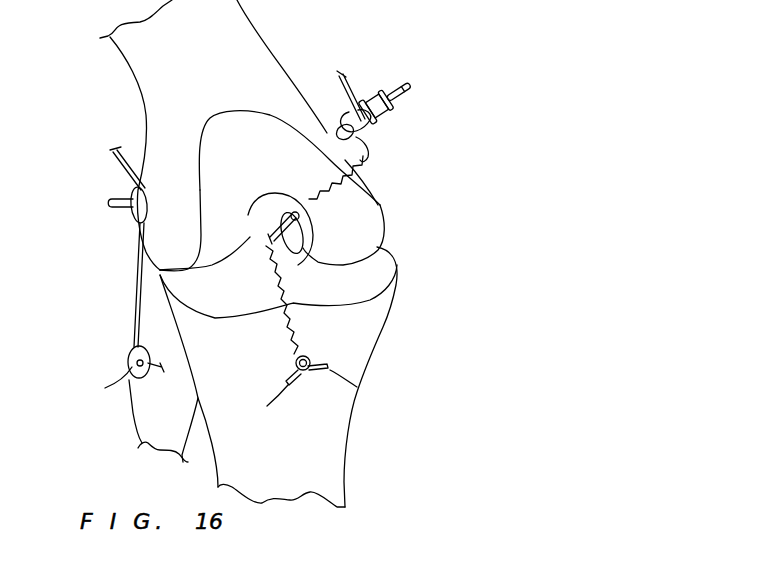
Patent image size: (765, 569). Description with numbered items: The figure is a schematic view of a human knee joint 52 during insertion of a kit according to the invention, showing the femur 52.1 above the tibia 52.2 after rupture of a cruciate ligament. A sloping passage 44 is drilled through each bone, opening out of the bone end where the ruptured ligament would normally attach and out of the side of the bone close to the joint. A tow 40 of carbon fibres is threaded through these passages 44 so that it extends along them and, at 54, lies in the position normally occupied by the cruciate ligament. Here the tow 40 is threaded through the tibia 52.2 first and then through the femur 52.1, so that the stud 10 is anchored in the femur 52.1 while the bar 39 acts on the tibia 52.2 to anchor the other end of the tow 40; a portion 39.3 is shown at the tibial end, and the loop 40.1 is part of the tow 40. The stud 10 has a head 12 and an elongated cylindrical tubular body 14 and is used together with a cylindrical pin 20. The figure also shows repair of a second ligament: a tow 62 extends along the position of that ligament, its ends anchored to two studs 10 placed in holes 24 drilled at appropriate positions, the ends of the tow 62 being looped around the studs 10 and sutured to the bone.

The stud 10 is at (128, 230).
The head 12 is at (147, 188).
The elongated cylindrical tubular body 14 is at (340, 127).
The cylindrical pin 20 is at (112, 197).
The hole 24 is at (328, 134).
The bar 39 is at (337, 348).
The tibial anchor strand 39.3 is at (307, 380).
The tow 40 is at (316, 230).
The loop 40.1 is at (312, 396).
The sloping passage 44 is at (272, 190).
The human knee joint 52 is at (510, 163).
The femur 52.1 is at (245, 40).
The tibia 52.2 is at (327, 470).
The cruciate ligament position 54 is at (272, 226).
The tow 62 is at (132, 298).